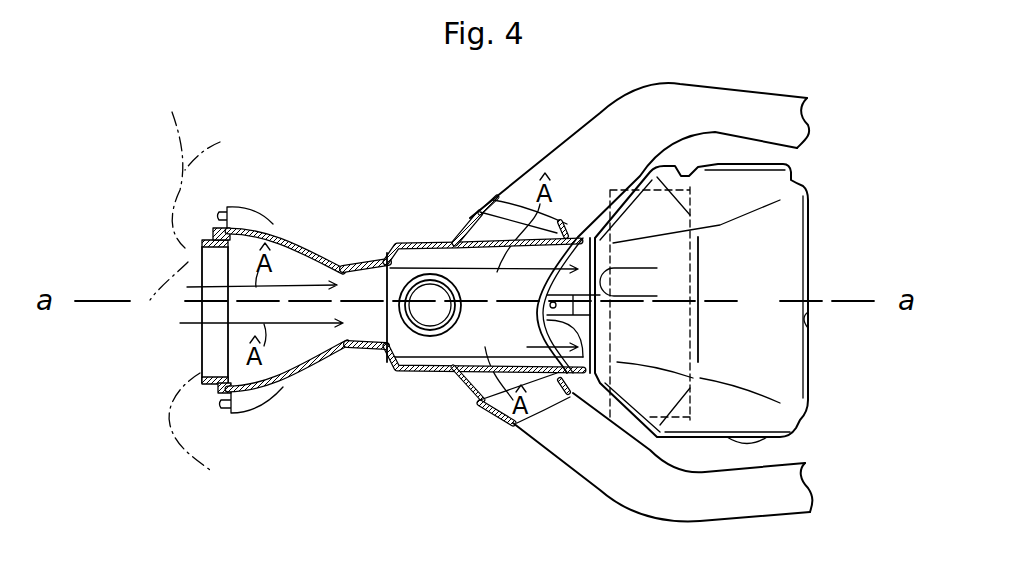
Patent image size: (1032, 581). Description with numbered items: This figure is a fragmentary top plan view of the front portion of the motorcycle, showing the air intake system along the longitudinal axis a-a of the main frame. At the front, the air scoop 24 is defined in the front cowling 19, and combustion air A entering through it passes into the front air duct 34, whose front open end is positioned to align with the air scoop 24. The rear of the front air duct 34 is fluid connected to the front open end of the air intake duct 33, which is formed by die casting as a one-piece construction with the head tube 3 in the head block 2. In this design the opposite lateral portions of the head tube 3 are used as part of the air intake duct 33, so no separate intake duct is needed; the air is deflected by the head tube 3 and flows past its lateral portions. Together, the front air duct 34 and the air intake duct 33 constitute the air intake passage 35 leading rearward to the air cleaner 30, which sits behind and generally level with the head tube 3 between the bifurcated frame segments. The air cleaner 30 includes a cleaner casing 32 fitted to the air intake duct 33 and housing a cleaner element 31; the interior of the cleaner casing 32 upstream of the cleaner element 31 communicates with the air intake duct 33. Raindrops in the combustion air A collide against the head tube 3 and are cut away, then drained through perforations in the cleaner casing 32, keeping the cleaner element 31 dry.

The head block 2 is at (483, 136).
The head tube 3 is at (432, 280).
The front cowling 19 is at (183, 278).
The air scoop 24 is at (172, 275).
The air cleaner 30 is at (820, 401).
The cleaner element 31 is at (690, 301).
The cleaner casing 32 is at (813, 227).
The air intake duct 33 is at (458, 243).
The front air duct 34 is at (308, 243).
The air intake passage 35 is at (362, 317).